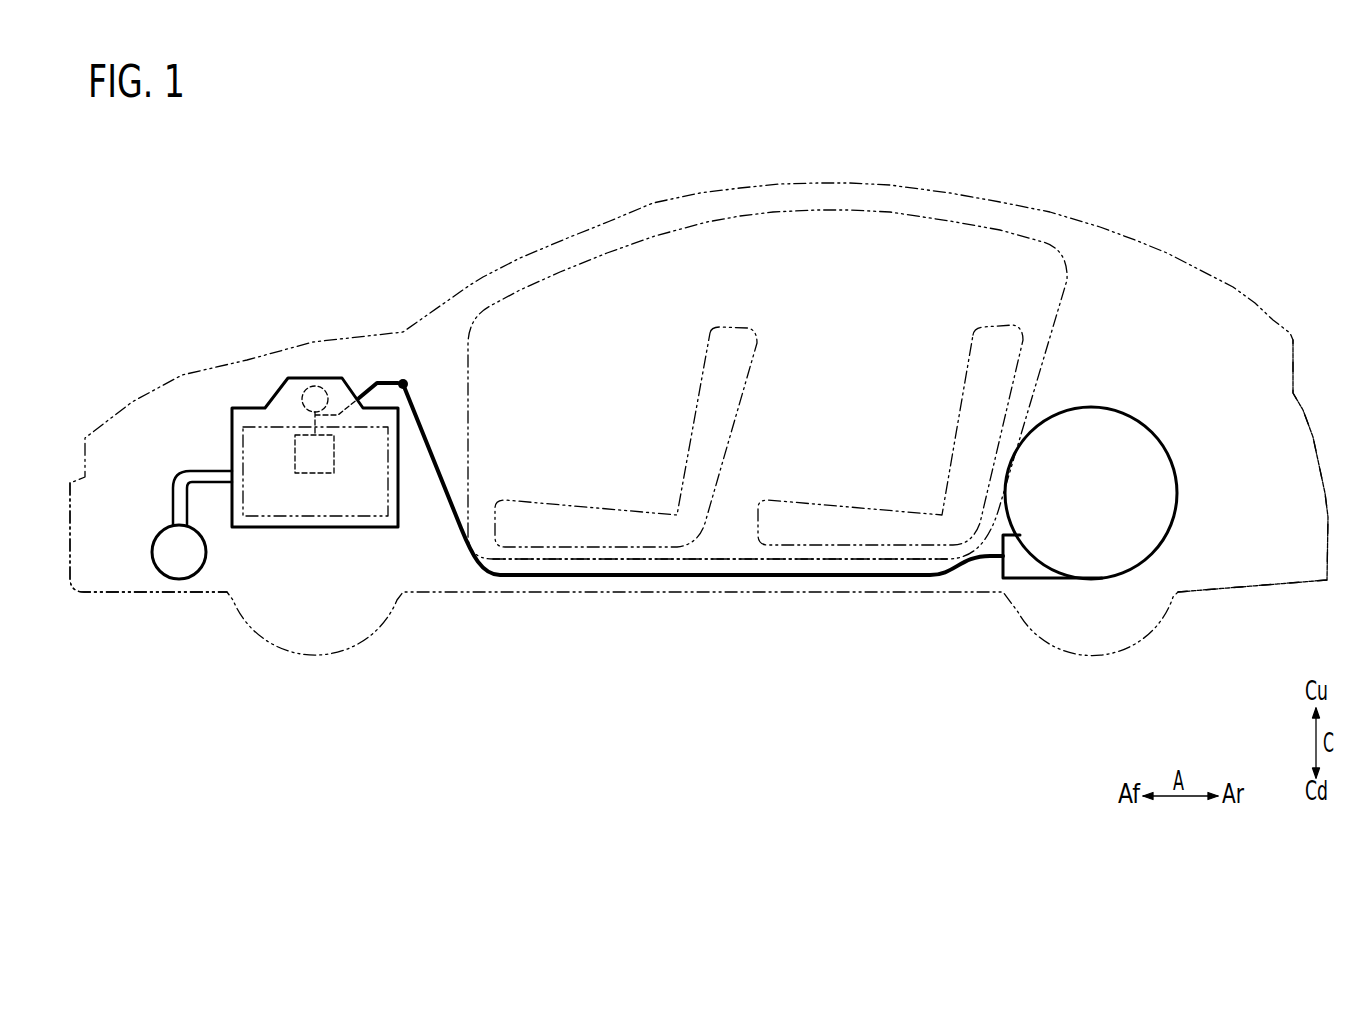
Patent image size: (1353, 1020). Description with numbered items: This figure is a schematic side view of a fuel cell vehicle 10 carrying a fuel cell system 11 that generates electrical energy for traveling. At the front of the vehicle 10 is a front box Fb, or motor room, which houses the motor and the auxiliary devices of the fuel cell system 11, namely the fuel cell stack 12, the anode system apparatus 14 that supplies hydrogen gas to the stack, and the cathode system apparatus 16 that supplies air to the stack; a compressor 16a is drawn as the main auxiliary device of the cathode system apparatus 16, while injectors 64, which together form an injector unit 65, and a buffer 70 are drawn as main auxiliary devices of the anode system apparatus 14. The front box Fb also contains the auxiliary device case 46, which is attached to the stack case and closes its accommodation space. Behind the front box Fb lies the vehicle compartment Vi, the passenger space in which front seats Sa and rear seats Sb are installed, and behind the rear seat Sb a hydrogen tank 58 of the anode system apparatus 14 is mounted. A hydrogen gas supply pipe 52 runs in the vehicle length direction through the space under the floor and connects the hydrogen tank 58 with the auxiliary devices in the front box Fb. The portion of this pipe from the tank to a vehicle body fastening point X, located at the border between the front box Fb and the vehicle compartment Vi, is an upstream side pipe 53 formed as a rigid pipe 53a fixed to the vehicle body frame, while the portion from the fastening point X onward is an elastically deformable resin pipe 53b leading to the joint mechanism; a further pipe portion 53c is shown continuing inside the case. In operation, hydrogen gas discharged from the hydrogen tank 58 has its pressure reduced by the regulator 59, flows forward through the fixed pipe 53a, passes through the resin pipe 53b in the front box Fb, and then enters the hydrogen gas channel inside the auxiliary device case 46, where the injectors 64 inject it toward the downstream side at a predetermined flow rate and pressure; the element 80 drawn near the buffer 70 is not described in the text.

The fuel cell vehicle 10 is at (368, 149).
The fuel cell system 11 is at (291, 420).
The fuel cell stack 12 is at (247, 427).
The anode system apparatus 14 is at (1180, 560).
The cathode system apparatus 16 is at (159, 553).
The compressor 16a is at (137, 555).
The auxiliary device case 46 is at (397, 528).
The hydrogen gas supply pipe 52 is at (710, 580).
The upstream side pipe 53 is at (631, 428).
The rigid pipe 53a is at (567, 577).
The resin pipe 53b is at (387, 381).
The pipe internal portion 53c is at (340, 412).
The hydrogen tank 58 is at (1150, 452).
The regulator 59 is at (1025, 570).
The injector 64 is at (321, 504).
The injector unit 65 is at (307, 475).
The buffer 70 is at (313, 386).
The joint 80 is at (291, 339).
The vehicle body fastening point X is at (407, 382).
The front box Fb is at (157, 457).
The front seat Sa is at (713, 323).
The rear seat Sb is at (978, 323).
The vehicle compartment Vi is at (823, 240).